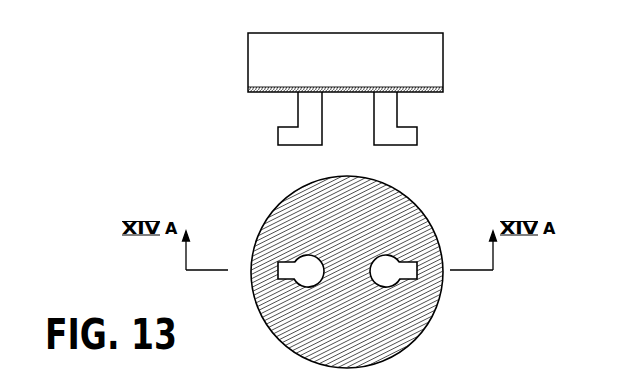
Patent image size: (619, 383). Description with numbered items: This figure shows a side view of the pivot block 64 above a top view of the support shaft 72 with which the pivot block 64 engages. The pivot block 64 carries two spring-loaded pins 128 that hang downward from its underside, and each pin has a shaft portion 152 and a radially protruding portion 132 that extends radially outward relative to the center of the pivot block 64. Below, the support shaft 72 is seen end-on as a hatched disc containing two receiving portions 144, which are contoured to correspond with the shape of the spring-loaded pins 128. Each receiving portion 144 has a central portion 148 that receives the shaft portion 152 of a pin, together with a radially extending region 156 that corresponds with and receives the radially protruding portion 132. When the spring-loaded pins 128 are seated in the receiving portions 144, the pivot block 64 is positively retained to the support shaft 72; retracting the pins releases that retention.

The pivot block 64 is at (446, 53).
The spring-loaded pins 128 is at (380, 86).
The radially protruding portions 132 is at (287, 137).
The shaft portion 152 is at (312, 107).
The support shaft 72 is at (410, 349).
The receiving portions 144 is at (395, 249).
The radially extending region 156 is at (282, 273).
The central portion 148 is at (377, 253).